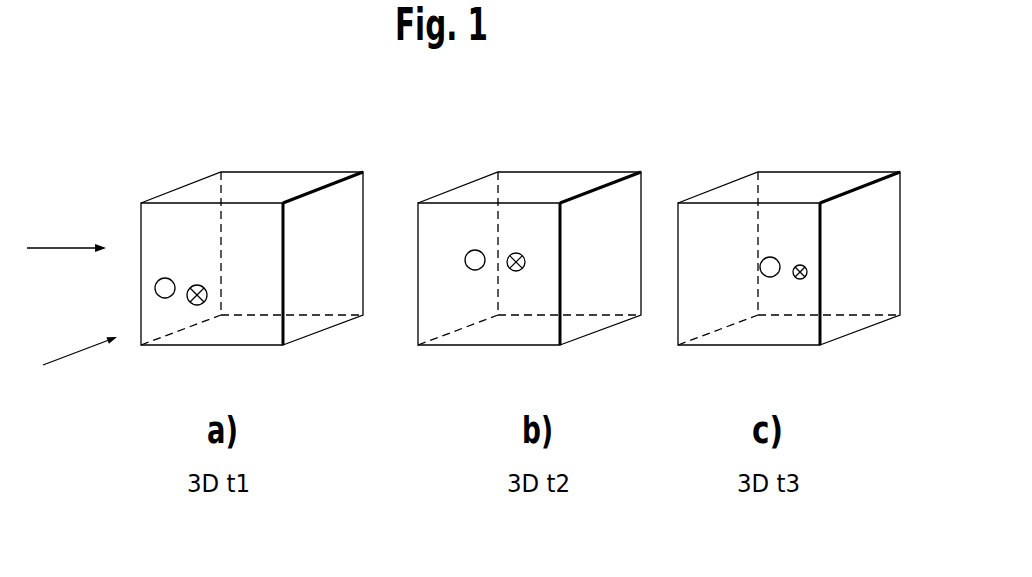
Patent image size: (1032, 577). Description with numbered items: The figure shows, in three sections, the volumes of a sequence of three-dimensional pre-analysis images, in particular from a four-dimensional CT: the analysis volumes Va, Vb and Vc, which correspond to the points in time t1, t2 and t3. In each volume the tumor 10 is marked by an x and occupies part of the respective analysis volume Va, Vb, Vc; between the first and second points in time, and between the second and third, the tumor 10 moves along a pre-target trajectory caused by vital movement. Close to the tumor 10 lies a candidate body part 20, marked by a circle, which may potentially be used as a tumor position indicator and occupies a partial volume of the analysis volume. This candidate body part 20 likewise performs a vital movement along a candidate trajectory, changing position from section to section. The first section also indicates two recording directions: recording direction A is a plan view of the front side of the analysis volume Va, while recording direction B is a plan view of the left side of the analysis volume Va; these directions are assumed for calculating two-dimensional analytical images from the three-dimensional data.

The tumor 10 is at (199, 305).
The candidate body part 20 is at (155, 288).
The analysis volume Va is at (294, 152).
The analysis volume Vb is at (551, 155).
The analysis volume Vc is at (824, 156).
The recording direction A is at (80, 345).
The recording direction B is at (66, 233).